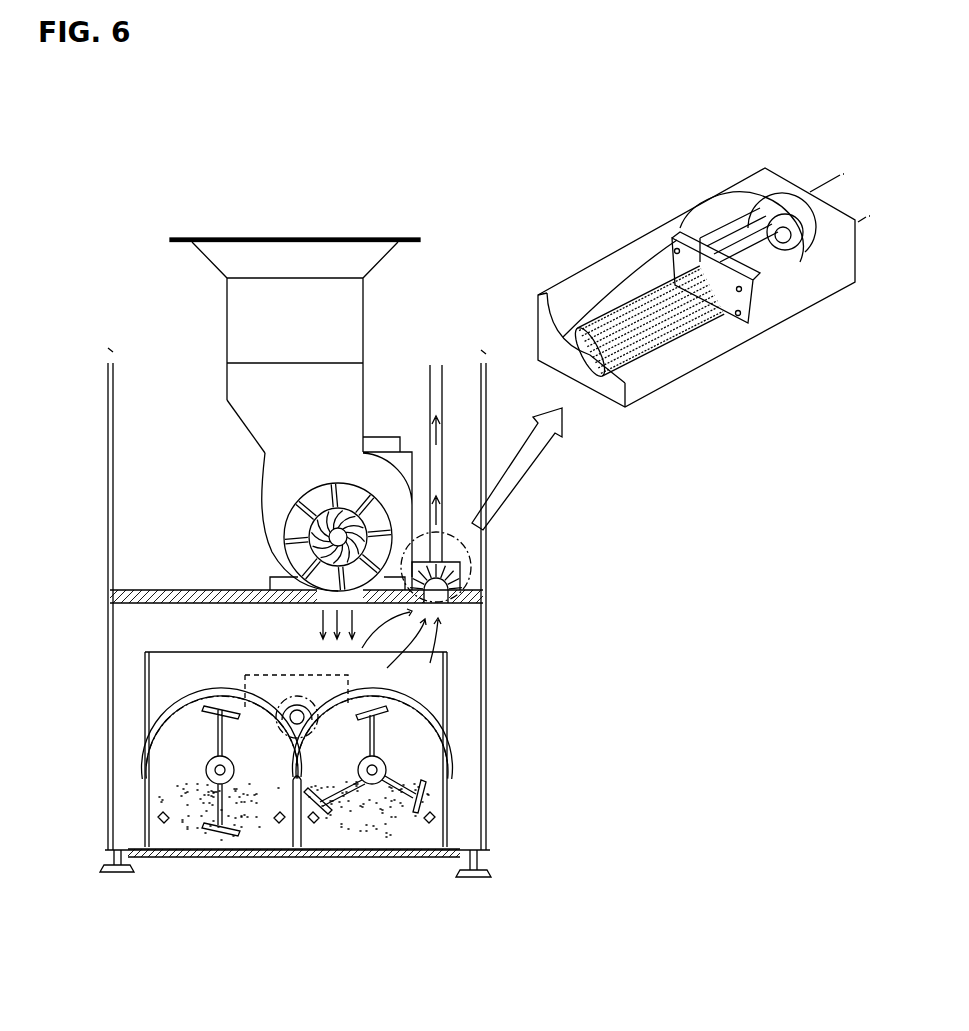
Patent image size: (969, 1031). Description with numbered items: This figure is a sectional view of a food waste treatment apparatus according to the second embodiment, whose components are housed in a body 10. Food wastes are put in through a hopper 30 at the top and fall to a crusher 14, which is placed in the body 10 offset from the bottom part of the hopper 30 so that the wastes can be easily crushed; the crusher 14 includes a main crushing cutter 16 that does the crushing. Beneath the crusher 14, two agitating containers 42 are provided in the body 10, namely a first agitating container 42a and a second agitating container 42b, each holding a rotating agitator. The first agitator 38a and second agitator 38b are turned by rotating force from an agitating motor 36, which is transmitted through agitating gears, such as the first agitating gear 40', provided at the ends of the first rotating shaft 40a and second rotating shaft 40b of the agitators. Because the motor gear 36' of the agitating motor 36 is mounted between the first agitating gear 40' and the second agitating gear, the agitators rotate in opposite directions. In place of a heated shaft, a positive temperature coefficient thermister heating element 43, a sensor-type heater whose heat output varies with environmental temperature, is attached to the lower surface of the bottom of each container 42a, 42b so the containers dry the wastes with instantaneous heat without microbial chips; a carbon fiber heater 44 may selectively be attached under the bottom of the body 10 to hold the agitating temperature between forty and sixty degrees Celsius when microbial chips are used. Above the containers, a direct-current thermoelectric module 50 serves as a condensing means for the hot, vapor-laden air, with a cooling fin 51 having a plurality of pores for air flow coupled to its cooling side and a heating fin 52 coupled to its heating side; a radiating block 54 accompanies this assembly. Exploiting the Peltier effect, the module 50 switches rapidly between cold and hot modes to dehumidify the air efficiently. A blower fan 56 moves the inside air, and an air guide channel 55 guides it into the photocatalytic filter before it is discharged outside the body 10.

The body 10 is at (486, 655).
The crusher 14 is at (400, 520).
The main crushing cutter 16 is at (293, 528).
The hopper 30 is at (243, 322).
The agitating motor 36 is at (428, 692).
The motor gear 36' is at (182, 685).
The first agitator 38a is at (373, 738).
The second agitator 38b is at (218, 770).
The first agitating gear 40' is at (216, 675).
The first rotating shaft 40a is at (378, 770).
The second rotating shaft 40b is at (205, 827).
The agitating containers 42 is at (400, 953).
The first agitating container 42a is at (400, 848).
The second agitating container 42b is at (242, 848).
The PTC thermister heating element 43 is at (163, 858).
The carbon fiber heater 44 is at (212, 858).
The thermoelectric module 50 is at (725, 308).
The cooling fin 51 is at (460, 585).
The heating fin 52 is at (775, 287).
The radiating block 54 is at (687, 233).
The air guide channel 55 is at (440, 465).
The blower fan 56 is at (793, 250).